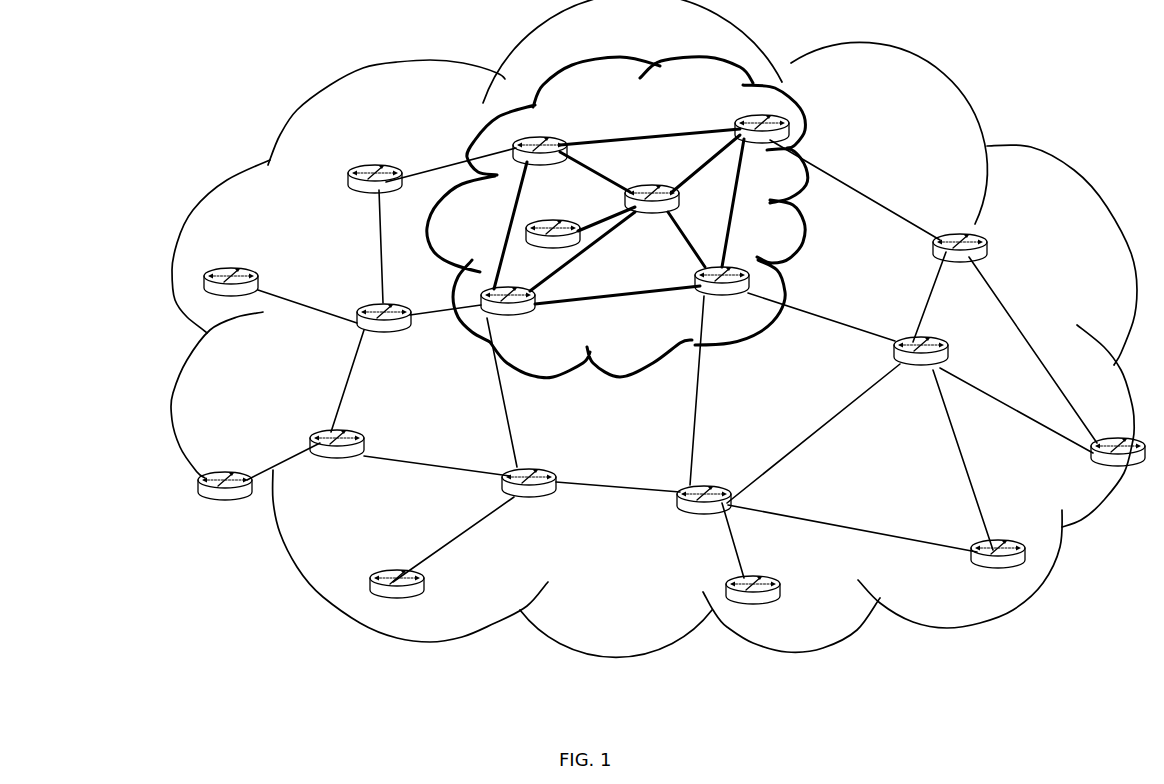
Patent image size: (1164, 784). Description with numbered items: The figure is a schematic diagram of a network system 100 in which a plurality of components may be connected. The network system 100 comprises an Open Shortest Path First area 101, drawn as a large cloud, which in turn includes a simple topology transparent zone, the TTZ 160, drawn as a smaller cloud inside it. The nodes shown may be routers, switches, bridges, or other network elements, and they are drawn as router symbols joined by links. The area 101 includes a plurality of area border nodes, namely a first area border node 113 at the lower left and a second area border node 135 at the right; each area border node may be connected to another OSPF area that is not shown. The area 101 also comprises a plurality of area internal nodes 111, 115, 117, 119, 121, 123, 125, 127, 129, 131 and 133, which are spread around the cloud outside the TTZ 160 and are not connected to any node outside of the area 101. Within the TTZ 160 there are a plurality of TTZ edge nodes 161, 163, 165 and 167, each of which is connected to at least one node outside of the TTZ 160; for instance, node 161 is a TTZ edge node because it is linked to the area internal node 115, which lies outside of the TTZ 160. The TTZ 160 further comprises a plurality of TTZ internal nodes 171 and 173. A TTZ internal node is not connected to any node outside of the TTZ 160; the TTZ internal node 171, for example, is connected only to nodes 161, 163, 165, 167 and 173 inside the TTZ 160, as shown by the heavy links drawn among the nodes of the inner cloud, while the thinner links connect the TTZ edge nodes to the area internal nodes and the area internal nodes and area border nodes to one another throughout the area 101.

The network system 100 is at (155, 108).
The Open Shortest Path First (OSPF) area 101 is at (1062, 155).
The area internal node 111 is at (231, 297).
The first area border node 113 is at (225, 500).
The area internal node 115 is at (375, 165).
The area internal node 117 is at (384, 332).
The area internal node 119 is at (337, 459).
The area internal node 121 is at (397, 598).
The area internal node 123 is at (529, 497).
The area internal node 125 is at (704, 515).
The area internal node 127 is at (753, 605).
The area internal node 129 is at (960, 234).
The area internal node 131 is at (921, 366).
The area internal node 133 is at (998, 569).
The second area border node 135 is at (1118, 439).
The simple TTZ 160 is at (594, 58).
The TTZ edge node 161 is at (540, 138).
The TTZ edge node 163 is at (762, 117).
The TTZ edge node 165 is at (508, 315).
The TTZ edge node 167 is at (722, 295).
The TTZ internal node 171 is at (652, 214).
The TTZ internal node 173 is at (553, 220).